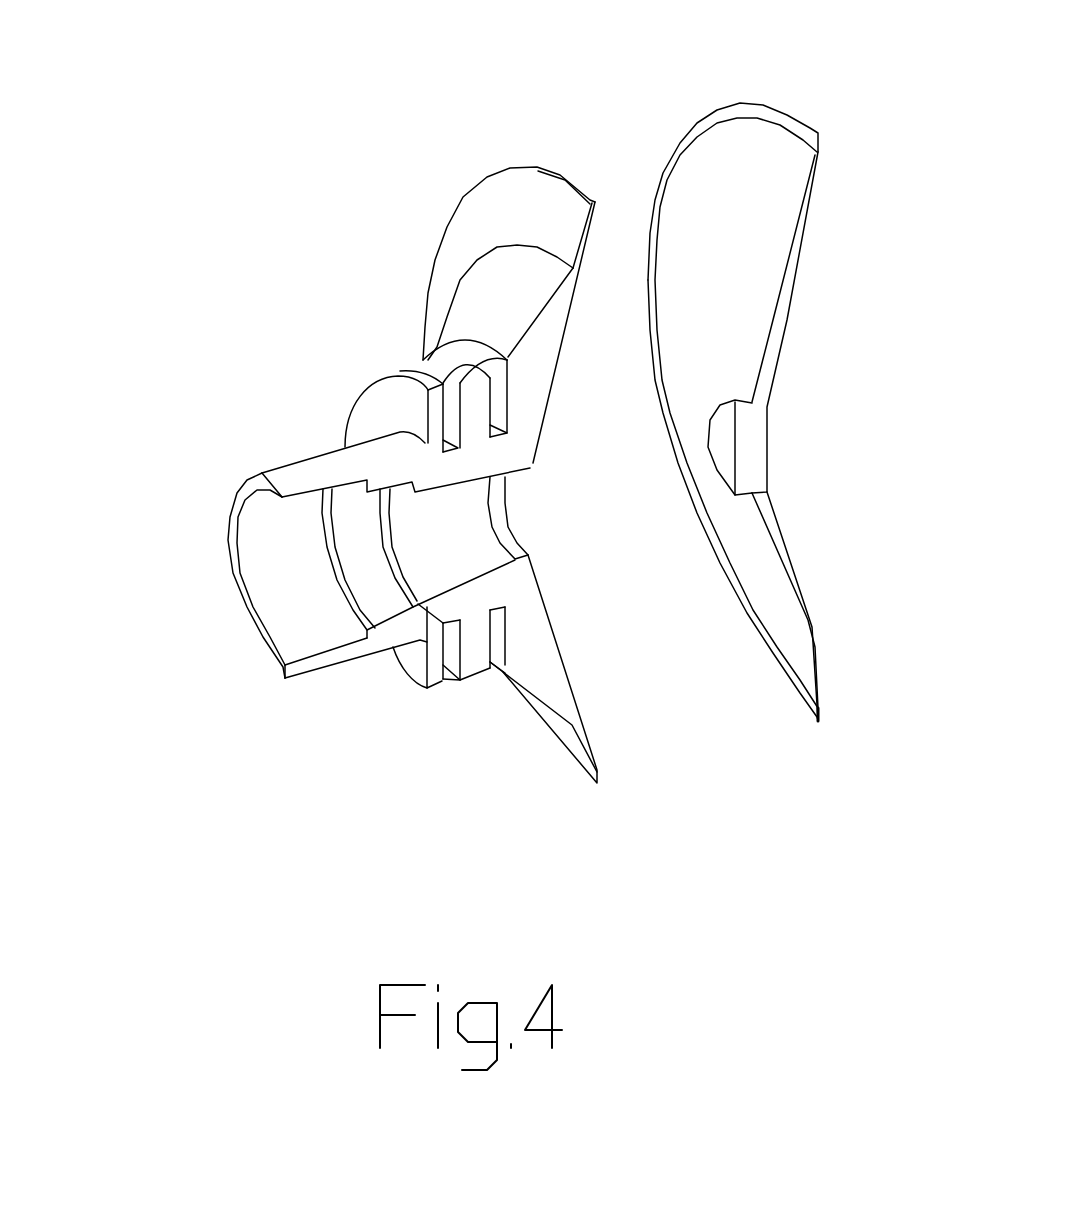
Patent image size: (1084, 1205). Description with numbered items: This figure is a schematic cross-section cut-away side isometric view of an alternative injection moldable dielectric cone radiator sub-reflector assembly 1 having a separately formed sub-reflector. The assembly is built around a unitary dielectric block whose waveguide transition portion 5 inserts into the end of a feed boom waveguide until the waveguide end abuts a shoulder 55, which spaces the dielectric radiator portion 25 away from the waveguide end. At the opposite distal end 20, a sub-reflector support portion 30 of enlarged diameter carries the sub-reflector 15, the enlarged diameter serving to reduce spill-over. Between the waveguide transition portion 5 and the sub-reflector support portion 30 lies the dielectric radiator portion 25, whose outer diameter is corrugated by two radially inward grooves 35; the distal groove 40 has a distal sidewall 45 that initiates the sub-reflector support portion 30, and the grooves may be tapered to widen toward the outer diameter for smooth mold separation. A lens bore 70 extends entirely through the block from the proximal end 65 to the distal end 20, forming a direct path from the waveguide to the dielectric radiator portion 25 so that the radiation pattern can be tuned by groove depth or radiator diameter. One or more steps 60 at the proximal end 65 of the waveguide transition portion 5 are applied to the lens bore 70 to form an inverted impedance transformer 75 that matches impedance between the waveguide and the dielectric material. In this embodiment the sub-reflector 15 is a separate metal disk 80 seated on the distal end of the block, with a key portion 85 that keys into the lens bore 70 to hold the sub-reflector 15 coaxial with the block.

The cone radiator sub-reflector assembly 1 is at (216, 463).
The waveguide transition portion 5 is at (330, 460).
The sub-reflector 15 is at (748, 567).
The distal end 20 is at (800, 425).
The dielectric radiator portion 25 is at (457, 368).
The sub-reflector support portion 30 is at (503, 287).
The grooves 35 is at (452, 672).
The distal groove 40 is at (497, 655).
The distal sidewall 45 is at (495, 657).
The shoulder 55 is at (392, 407).
The step 60 is at (362, 610).
The proximal end 65 is at (213, 578).
The lens bore 70 is at (470, 527).
The inverted impedance transformer 75 is at (297, 607).
The metal disk 80 is at (793, 287).
The key portion 85 is at (723, 433).